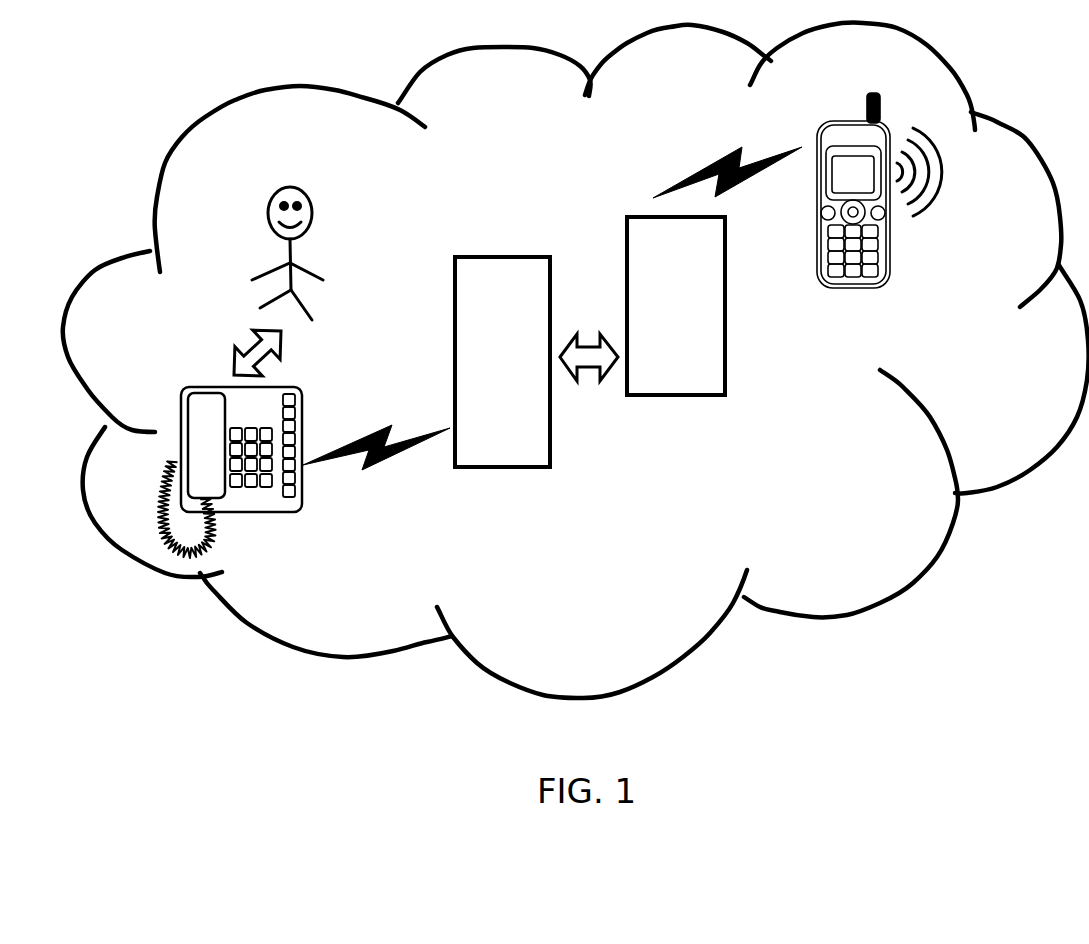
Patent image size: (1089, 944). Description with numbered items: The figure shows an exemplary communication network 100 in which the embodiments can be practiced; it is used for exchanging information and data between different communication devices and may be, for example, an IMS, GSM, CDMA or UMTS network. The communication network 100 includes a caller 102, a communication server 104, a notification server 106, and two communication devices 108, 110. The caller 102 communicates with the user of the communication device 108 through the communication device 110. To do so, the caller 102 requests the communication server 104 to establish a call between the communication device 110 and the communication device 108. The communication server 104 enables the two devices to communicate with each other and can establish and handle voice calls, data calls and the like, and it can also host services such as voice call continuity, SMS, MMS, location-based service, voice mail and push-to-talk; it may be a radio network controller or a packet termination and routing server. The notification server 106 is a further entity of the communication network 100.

The communication network 100 is at (993, 729).
The caller 102 is at (292, 187).
The communication server 104 is at (500, 467).
The notification server 106 is at (726, 306).
The communication device 108 is at (875, 287).
The communication device 110 is at (288, 513).